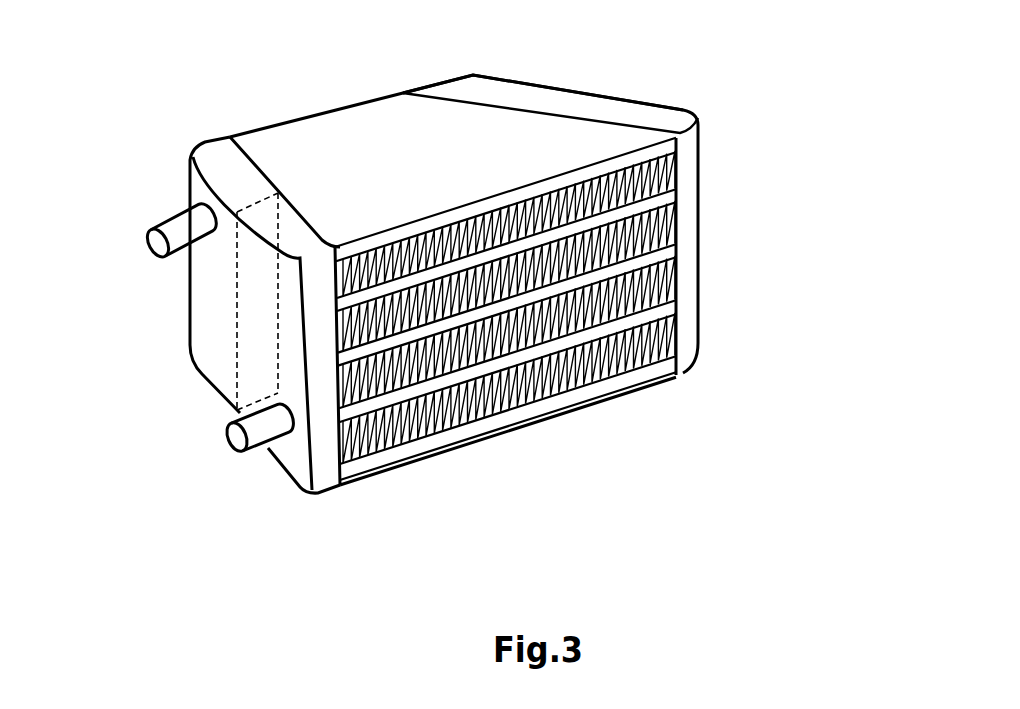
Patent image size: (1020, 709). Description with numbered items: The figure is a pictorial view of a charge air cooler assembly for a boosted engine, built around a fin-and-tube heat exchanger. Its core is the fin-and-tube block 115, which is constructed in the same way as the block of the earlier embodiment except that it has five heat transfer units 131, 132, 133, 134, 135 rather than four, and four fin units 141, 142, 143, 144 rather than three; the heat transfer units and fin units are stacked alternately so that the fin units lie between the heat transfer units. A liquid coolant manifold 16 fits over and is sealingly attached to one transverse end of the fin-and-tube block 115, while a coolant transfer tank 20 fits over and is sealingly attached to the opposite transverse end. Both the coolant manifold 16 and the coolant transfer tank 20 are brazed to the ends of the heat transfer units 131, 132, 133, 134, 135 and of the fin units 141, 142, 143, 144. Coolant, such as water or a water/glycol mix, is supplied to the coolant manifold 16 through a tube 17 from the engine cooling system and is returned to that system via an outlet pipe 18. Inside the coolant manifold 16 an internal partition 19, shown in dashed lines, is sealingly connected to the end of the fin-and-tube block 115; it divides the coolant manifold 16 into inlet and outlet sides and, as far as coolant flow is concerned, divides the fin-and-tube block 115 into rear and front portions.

The fin-and-tube block 115 is at (337, 109).
The coolant transfer tank 20 is at (605, 93).
The liquid coolant manifold 16 is at (192, 152).
The tube 17 is at (170, 220).
The outlet pipe 18 is at (228, 440).
The internal partition 19 is at (237, 345).
The heat transfer unit 131 is at (667, 148).
The heat transfer unit 132 is at (670, 198).
The heat transfer unit 133 is at (670, 260).
The heat transfer unit 134 is at (680, 318).
The heat transfer unit 135 is at (683, 378).
The fin unit 141 is at (670, 172).
The fin unit 142 is at (670, 228).
The fin unit 143 is at (680, 290).
The fin unit 144 is at (680, 345).